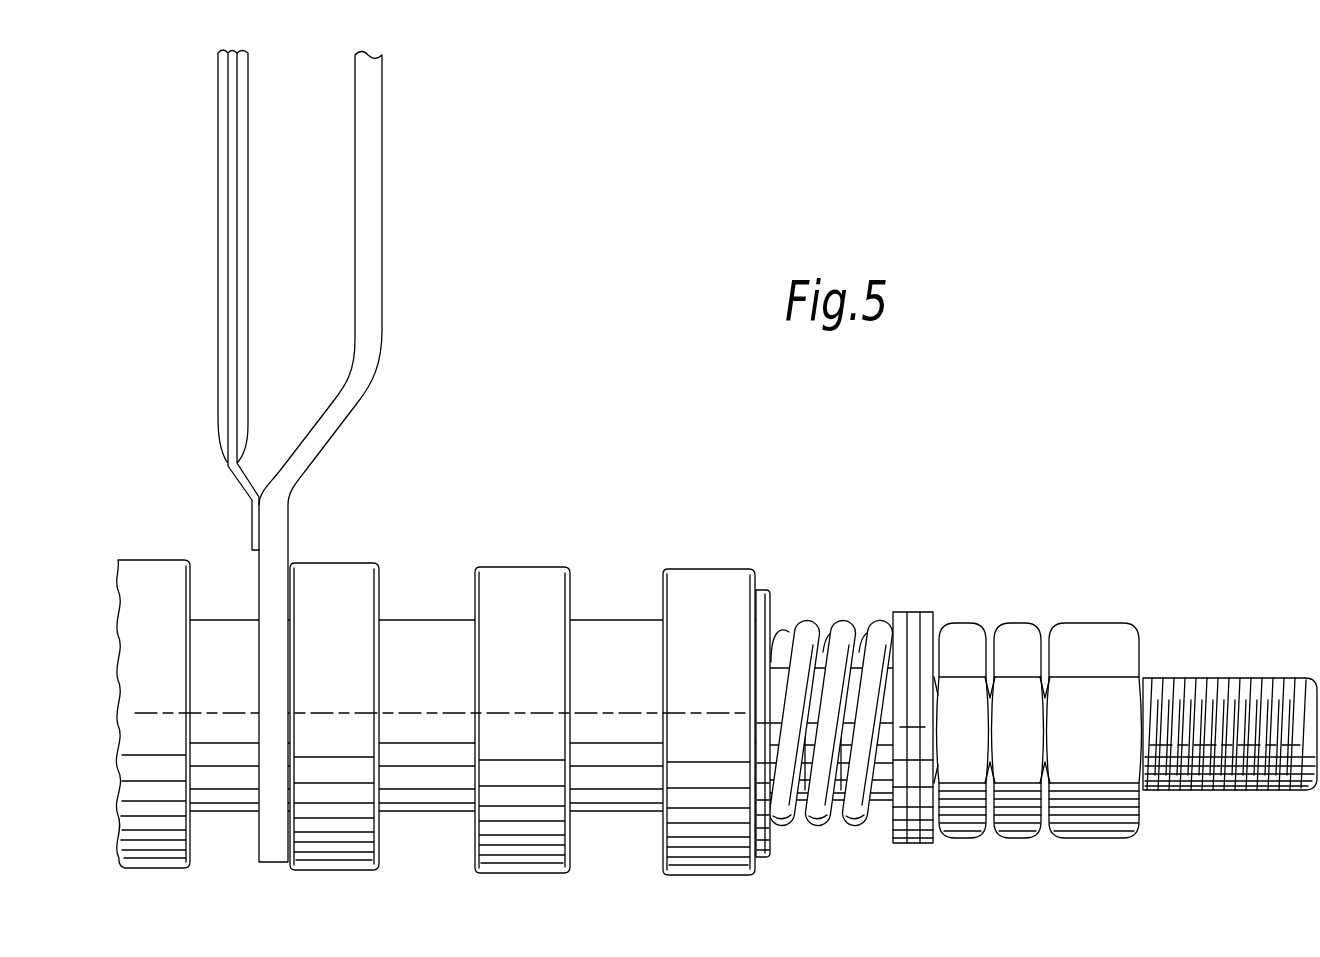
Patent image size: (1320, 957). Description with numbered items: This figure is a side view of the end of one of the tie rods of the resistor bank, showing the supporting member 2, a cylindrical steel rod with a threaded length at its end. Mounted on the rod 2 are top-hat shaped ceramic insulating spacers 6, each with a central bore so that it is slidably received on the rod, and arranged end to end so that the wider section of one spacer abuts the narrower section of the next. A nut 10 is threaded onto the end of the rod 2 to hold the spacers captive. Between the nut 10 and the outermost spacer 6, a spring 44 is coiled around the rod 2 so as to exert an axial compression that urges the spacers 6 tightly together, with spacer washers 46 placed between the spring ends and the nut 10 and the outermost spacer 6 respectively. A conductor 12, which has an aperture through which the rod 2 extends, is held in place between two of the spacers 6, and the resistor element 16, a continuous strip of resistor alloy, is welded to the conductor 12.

The supporting member 2 is at (1253, 683).
The insulating spacer 6 is at (599, 548).
The nut 10 is at (1093, 830).
The conductor 12 is at (372, 163).
The resistor element 16 is at (218, 154).
The spring 44 is at (850, 627).
The spacer washer 46 is at (767, 590).